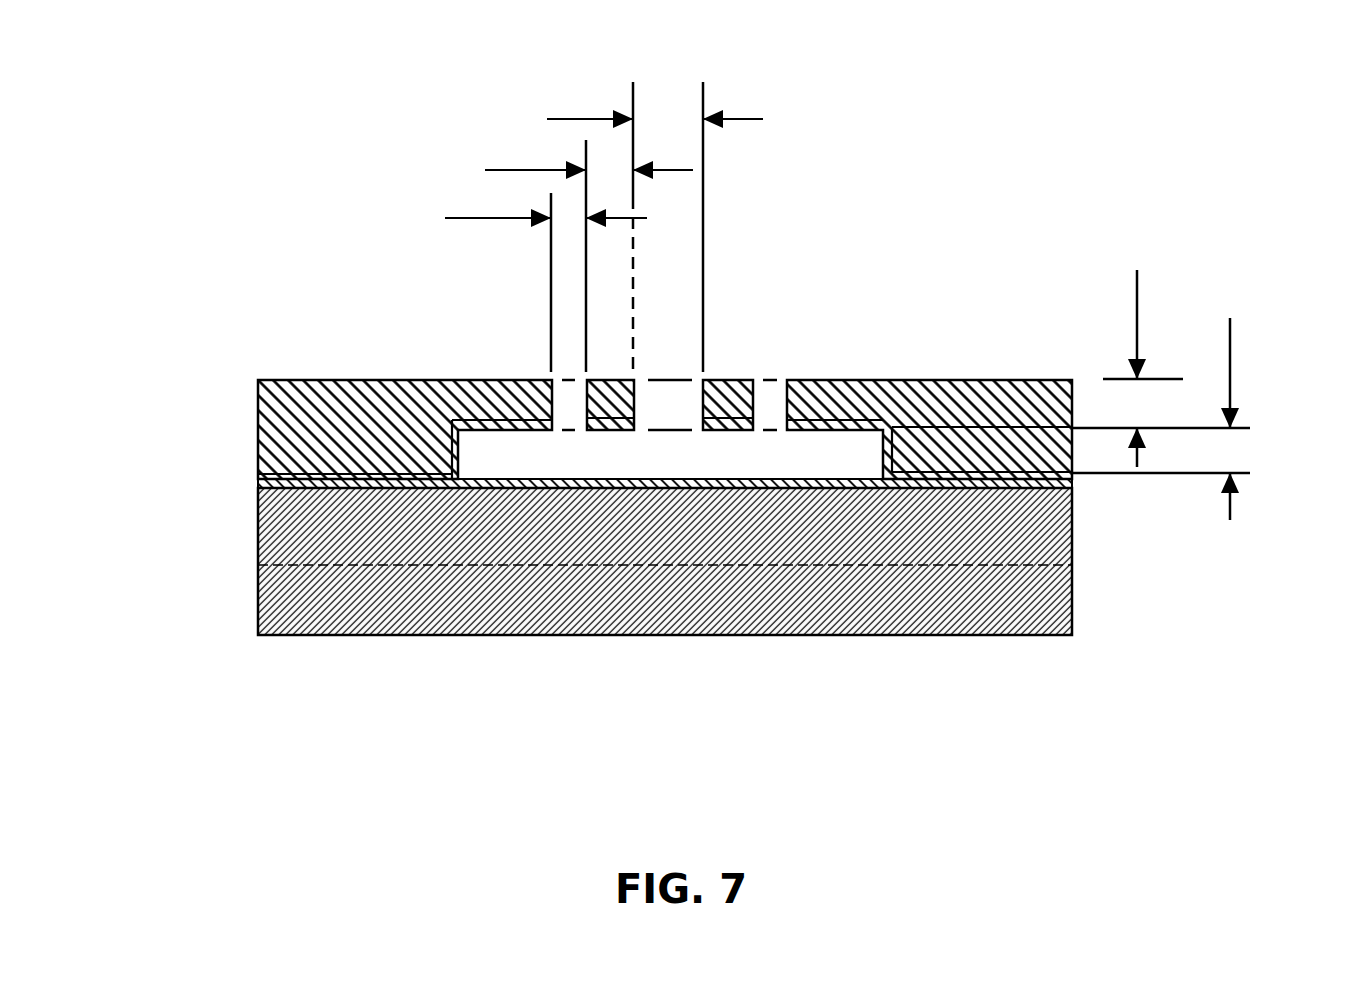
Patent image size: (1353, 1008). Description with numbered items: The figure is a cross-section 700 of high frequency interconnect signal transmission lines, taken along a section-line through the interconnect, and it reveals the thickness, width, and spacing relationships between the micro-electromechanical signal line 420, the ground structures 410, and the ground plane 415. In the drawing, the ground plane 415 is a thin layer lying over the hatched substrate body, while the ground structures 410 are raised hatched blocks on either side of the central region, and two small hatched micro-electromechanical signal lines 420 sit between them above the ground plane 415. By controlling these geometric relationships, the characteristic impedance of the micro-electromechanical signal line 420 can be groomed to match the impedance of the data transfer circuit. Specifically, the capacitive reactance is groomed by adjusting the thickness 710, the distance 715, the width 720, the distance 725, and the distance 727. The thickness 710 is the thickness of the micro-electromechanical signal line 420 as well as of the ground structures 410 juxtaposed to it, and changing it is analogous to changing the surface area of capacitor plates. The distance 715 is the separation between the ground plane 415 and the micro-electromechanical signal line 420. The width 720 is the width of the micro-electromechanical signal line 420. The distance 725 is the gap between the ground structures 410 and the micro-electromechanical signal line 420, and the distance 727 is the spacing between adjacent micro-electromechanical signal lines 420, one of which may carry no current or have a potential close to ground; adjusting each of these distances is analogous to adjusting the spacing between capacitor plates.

The cross-section 700 is at (123, 66).
The ground structures 410 is at (345, 394).
The ground plane 415 is at (258, 484).
The micro-electromechanical signal line 420 is at (610, 403).
The thickness 710 is at (1137, 308).
The distance 715 is at (1230, 353).
The width 720 is at (528, 168).
The distance 725 is at (481, 218).
The distance 727 is at (590, 119).